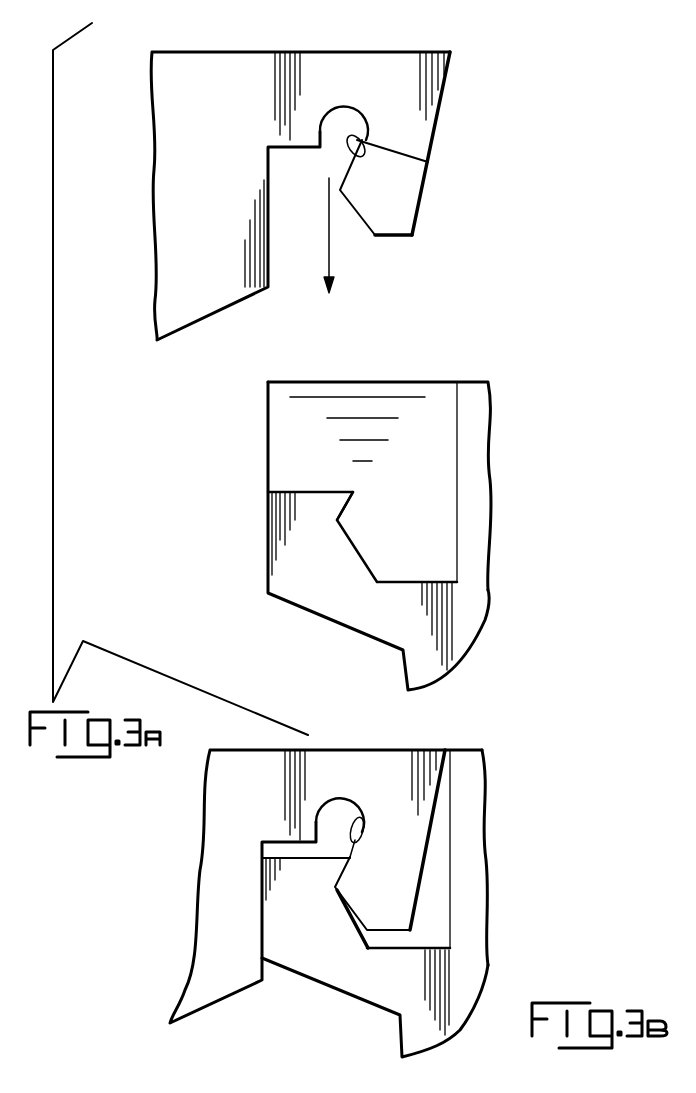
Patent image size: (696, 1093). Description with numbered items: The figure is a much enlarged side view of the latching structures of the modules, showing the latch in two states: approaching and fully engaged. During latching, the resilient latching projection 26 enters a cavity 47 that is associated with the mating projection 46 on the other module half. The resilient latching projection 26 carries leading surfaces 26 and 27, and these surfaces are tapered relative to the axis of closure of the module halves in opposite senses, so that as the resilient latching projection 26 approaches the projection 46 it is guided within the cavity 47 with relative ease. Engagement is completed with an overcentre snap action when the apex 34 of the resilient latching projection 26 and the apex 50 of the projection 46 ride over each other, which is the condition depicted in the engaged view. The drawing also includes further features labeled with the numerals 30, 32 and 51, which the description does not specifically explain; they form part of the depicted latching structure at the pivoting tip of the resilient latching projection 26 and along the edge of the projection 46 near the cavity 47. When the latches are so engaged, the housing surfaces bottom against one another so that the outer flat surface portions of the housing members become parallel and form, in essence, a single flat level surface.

In FIG. 3A, the resilient latching projection 26 is at (221, 109).
In FIG. 3B, the resilient latching projection 26 is at (251, 804).
In FIG. 3A, the leading surface 27 is at (420, 195).
In FIG. 3B, the leading surface 27 is at (425, 858).
In FIG. 3A, the latch member 30 is at (365, 225).
In FIG. 3B, the latch member 30 is at (353, 932).
In FIG. 3A, the pivot hole 32 is at (424, 162).
In FIG. 3B, the pivot hole 32 is at (350, 857).
In FIG. 3A, the apex 34 is at (340, 192).
In FIG. 3B, the apex 34 is at (335, 887).
In FIG. 3A, the projection 46 is at (341, 580).
In FIG. 3B, the projection 46 is at (325, 948).
In FIG. 3A, the cavity 47 is at (435, 503).
In FIG. 3B, the cavity 47 is at (433, 913).
In FIG. 3A, the apex 50 is at (355, 490).
In FIG. 3B, the apex 50 is at (350, 857).
In FIG. 3A, the edge line 51 is at (457, 382).
In FIG. 3B, the edge line 51 is at (452, 752).